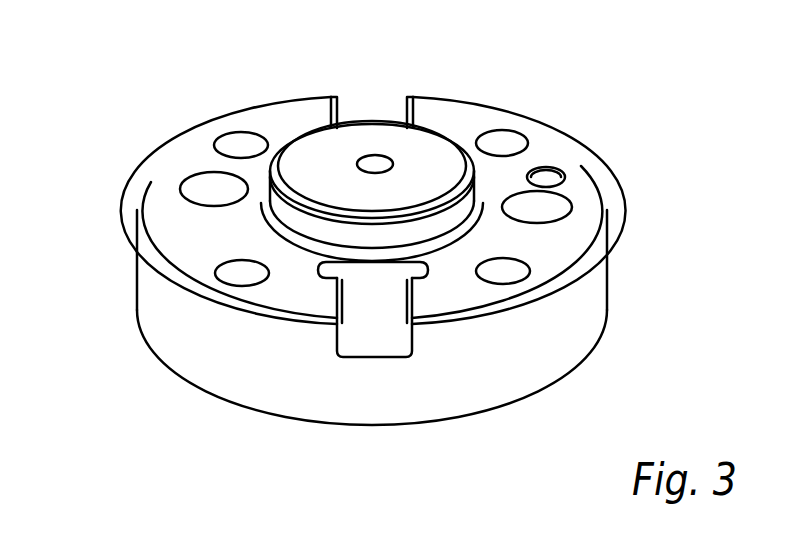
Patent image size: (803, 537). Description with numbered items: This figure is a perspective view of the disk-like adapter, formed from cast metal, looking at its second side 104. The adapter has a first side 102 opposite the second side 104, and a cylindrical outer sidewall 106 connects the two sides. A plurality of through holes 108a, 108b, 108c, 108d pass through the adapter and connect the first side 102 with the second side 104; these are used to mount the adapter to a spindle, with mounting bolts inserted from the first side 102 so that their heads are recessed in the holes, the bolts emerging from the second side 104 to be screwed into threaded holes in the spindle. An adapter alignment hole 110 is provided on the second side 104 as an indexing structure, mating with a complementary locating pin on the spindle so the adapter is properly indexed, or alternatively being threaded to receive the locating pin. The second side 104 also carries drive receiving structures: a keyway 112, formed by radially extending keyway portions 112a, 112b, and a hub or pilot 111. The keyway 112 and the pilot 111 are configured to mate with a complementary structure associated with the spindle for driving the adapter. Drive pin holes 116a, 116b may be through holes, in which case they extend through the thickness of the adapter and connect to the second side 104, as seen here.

The first side 102 is at (473, 414).
The second side 104 is at (160, 214).
The cylindrical outer sidewall 106 is at (532, 366).
The through hole 108a is at (238, 143).
The through hole 108b is at (502, 142).
The through hole 108c is at (507, 272).
The through hole 108d is at (237, 272).
The adapter alignment hole 110 is at (547, 178).
The pilot 111 is at (342, 145).
The keyway 112 is at (380, 326).
The keyway portion 112a is at (382, 107).
The keyway portion 112b is at (353, 335).
The drive pin hole 116a is at (200, 188).
The drive pin hole 116b is at (553, 208).